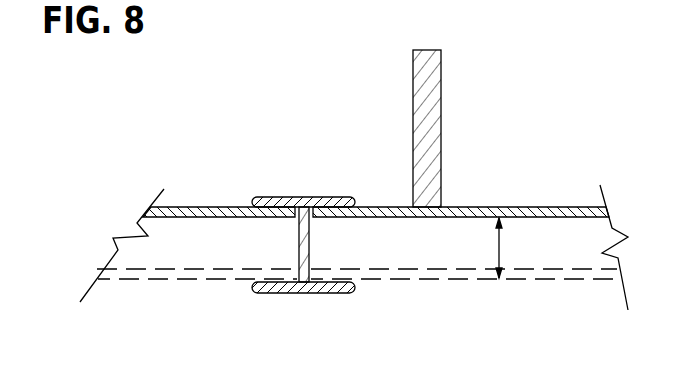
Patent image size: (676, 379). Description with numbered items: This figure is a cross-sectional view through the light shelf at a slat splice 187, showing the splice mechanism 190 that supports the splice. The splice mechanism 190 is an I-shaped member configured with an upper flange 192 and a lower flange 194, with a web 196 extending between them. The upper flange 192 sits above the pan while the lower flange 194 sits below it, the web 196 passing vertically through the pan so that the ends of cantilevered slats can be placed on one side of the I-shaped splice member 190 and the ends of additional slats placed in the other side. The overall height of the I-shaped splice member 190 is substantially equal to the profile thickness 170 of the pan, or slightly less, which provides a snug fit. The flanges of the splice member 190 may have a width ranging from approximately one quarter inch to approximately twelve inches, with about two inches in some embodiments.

The profile thickness of the pan 170 is at (500, 243).
The slat splice 187 is at (332, 158).
The splice mechanism 190 is at (260, 197).
The upper flange 192 is at (287, 197).
The lower flange 194 is at (275, 288).
The web 196 is at (308, 253).